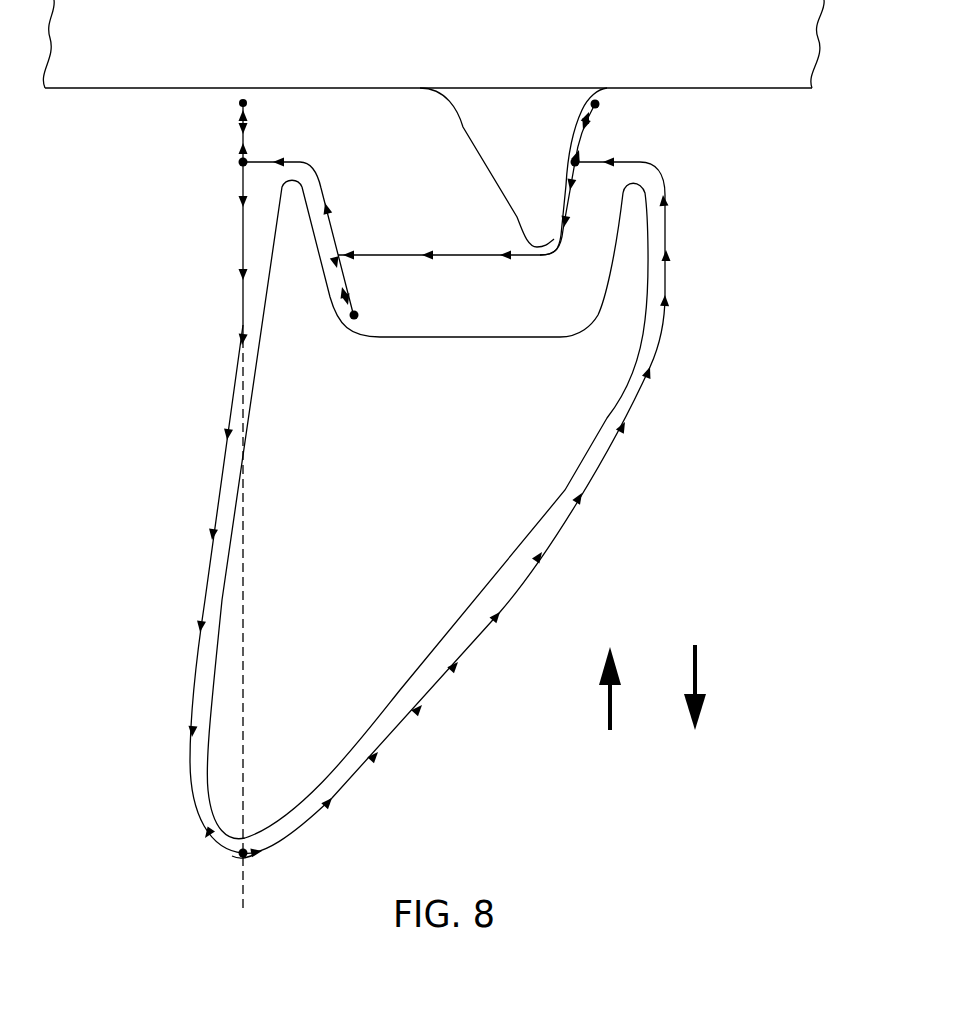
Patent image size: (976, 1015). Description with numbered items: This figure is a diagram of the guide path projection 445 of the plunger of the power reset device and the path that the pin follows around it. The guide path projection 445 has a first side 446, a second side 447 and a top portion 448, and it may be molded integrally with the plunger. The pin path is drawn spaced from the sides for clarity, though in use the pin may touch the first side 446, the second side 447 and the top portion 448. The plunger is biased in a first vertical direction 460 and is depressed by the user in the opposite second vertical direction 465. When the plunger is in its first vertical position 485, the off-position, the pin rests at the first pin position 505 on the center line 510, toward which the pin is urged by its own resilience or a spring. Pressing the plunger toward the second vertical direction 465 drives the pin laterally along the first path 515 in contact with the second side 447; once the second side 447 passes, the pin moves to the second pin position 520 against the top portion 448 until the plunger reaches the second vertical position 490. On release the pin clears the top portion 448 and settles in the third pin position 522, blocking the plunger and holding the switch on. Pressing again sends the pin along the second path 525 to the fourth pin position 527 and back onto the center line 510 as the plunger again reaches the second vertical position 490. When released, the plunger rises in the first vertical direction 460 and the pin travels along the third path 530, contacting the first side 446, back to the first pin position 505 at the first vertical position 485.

The guide path projection 445 is at (131, 207).
The first side 446 is at (252, 378).
The second side 447 is at (565, 492).
The top portion 448 is at (599, 104).
The first vertical direction 460 is at (610, 706).
The second vertical direction 465 is at (697, 705).
The first vertical position 485 is at (257, 870).
The second vertical position 490 is at (224, 104).
The first pin position 505 is at (240, 856).
The center line 510 is at (248, 661).
The first path 515 is at (441, 687).
The second pin position 520 is at (572, 159).
The third pin position 522 is at (359, 314).
The second path 525 is at (285, 158).
The fourth pin position 527 is at (240, 161).
The third path 530 is at (206, 583).